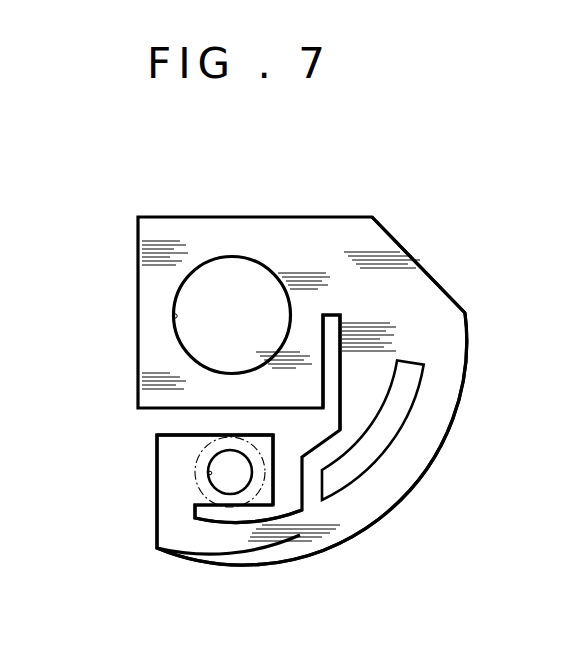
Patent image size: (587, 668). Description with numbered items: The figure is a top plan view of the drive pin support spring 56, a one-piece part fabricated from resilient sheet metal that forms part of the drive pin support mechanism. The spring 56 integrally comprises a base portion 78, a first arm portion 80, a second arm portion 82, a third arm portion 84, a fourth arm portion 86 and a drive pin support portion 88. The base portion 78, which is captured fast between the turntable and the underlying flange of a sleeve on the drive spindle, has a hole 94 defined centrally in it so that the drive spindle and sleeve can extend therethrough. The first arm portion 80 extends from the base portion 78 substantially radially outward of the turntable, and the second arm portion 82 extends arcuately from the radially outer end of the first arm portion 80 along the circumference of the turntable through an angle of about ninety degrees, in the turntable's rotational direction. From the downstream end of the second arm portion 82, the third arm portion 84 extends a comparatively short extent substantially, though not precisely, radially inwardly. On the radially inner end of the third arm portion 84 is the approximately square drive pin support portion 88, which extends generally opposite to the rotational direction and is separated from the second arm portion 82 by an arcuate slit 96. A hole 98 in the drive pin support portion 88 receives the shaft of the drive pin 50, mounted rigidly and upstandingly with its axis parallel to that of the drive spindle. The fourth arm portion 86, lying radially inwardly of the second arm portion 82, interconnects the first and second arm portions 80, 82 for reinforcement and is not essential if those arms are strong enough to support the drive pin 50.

The drive pin support spring 56 is at (402, 209).
The base portion 78 is at (244, 228).
The first arm portion 80 is at (417, 275).
The second arm portion 82 is at (418, 446).
The third arm portion 84 is at (163, 520).
The fourth arm portion 86 is at (380, 388).
The drive pin support portion 88 is at (222, 437).
The drive pin 50 is at (196, 468).
The hole 94 is at (173, 317).
The arcuate slit 96 is at (229, 515).
The hole 98 is at (208, 474).